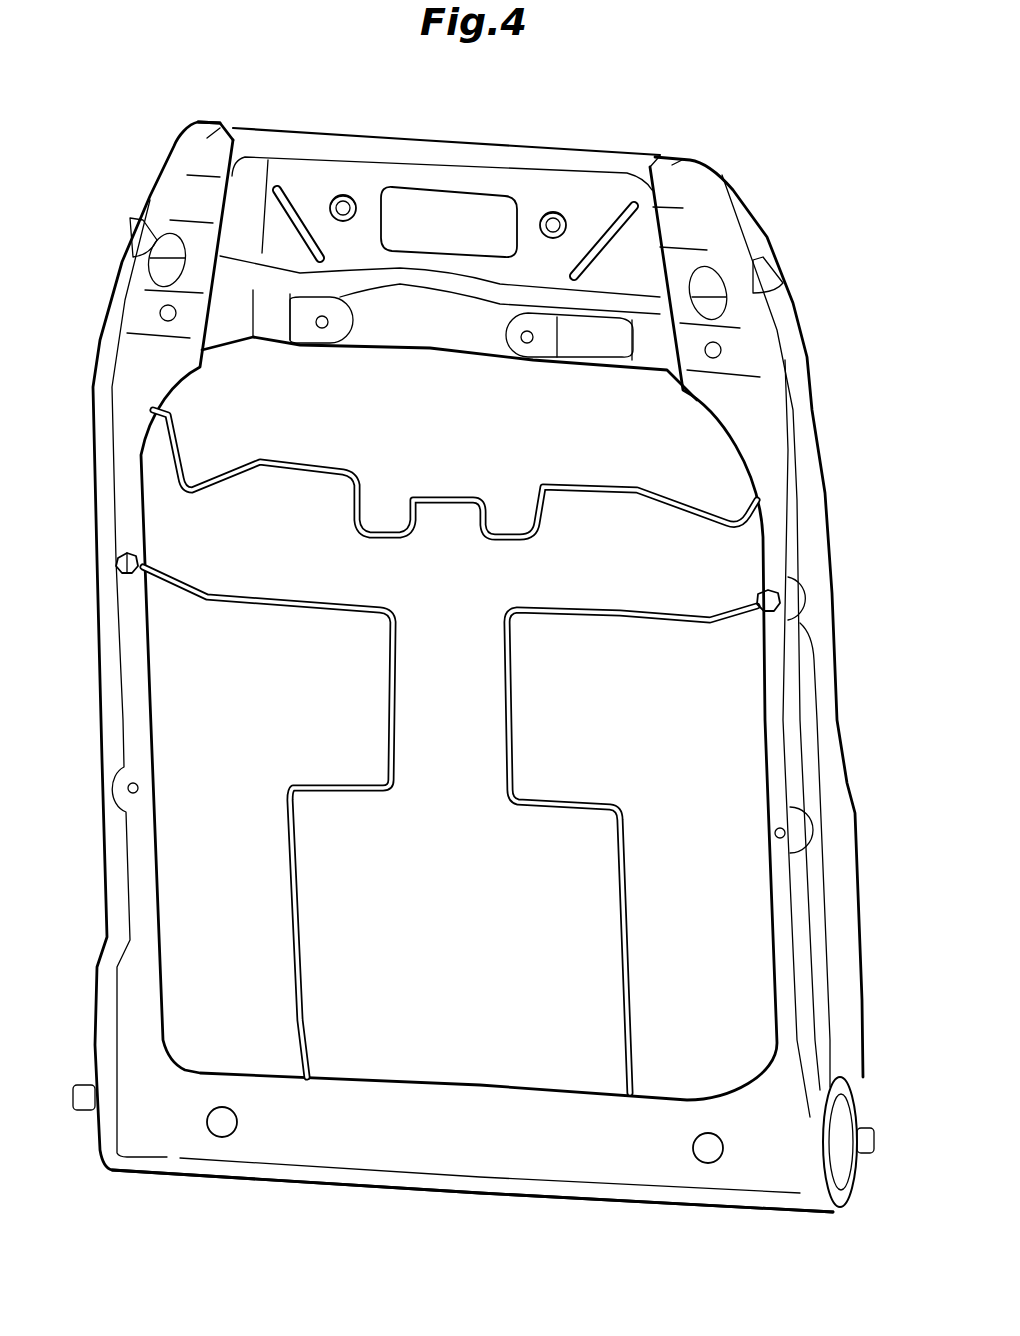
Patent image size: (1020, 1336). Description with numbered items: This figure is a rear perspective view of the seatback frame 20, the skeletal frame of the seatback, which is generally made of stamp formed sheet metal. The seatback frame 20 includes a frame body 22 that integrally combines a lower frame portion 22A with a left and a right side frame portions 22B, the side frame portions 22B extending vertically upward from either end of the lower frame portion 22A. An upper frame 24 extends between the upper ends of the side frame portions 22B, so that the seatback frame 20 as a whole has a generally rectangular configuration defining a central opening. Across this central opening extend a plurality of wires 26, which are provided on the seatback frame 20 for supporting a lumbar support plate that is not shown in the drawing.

The seatback frame 20 is at (820, 422).
The frame body 22 is at (804, 517).
The lower frame portion 22A is at (447, 1183).
The side frame portions 22B is at (100, 662).
The upper frame 24 is at (525, 190).
The wires 26 is at (545, 520).